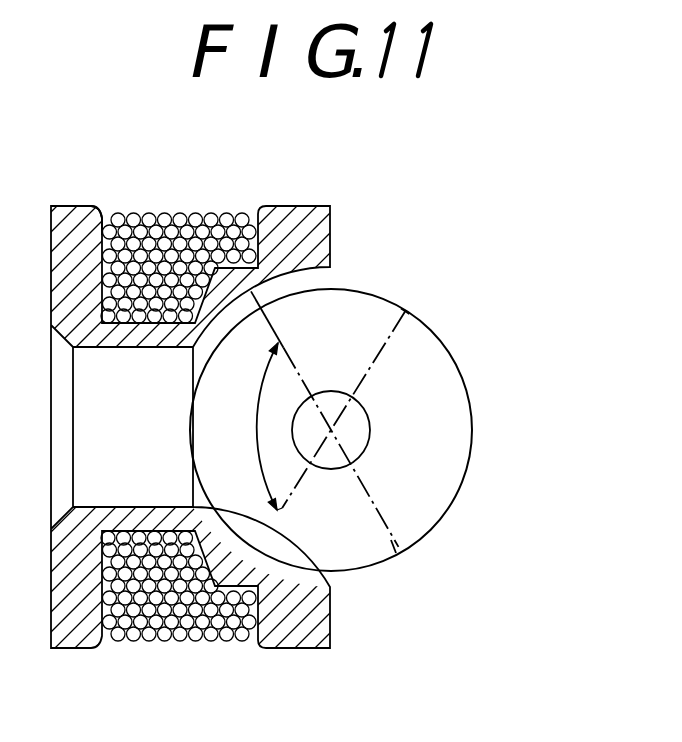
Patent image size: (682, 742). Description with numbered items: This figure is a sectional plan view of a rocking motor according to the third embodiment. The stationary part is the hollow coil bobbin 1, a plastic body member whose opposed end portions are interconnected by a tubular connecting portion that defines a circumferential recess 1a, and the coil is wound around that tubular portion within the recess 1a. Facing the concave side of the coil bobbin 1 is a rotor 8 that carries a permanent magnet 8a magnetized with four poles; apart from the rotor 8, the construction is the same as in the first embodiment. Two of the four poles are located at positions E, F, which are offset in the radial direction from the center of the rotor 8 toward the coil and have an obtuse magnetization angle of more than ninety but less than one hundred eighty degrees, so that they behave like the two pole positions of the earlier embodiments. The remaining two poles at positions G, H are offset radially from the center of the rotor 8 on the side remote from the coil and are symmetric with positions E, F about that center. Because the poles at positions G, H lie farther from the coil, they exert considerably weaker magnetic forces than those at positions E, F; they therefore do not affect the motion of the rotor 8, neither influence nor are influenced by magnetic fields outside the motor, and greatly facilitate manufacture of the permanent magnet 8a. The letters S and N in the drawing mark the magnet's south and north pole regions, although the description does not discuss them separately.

The coil bobbin 1 is at (309, 237).
The circumferential recess 1a is at (106, 215).
The rotor 8 is at (449, 354).
The permanent magnet 8a is at (447, 453).
The pole position E is at (273, 317).
The pole position F is at (280, 530).
The pole position G is at (401, 314).
The pole position H is at (394, 545).
The south pole S is at (260, 411).
The north pole N is at (259, 520).